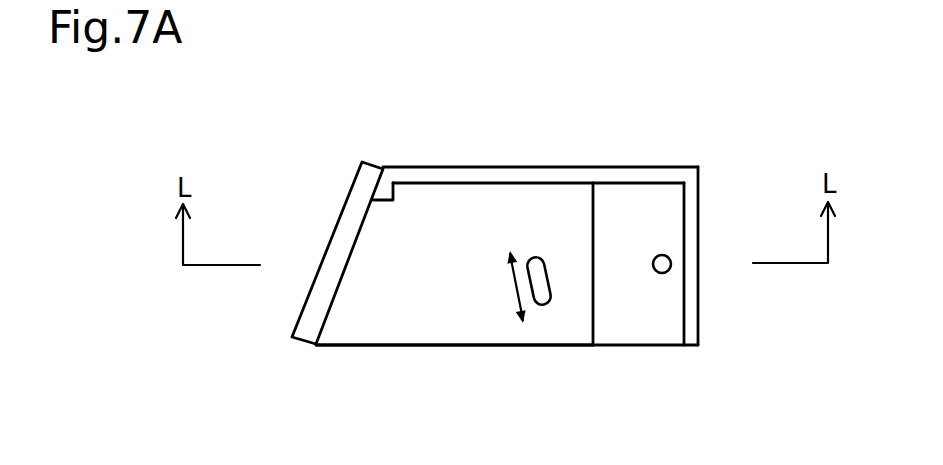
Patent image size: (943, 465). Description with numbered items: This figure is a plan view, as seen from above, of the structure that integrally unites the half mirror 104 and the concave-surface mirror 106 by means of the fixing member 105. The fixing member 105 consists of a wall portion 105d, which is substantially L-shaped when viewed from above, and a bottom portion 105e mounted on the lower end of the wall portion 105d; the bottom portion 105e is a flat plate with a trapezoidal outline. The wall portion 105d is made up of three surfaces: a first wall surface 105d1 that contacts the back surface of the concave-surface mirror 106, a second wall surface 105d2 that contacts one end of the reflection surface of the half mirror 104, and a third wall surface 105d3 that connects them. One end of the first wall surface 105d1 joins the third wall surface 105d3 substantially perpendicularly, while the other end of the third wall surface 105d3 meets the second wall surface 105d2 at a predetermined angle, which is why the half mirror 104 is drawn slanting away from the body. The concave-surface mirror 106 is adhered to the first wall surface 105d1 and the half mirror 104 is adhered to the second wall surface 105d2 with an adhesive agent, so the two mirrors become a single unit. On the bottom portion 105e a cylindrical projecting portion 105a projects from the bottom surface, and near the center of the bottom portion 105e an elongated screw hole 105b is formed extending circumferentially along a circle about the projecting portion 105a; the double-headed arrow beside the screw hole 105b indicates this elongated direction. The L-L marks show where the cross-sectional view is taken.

The half mirror 104 is at (346, 202).
The fixing member 105 is at (370, 327).
The projecting portion 105a is at (671, 265).
The elongated screw hole 105b is at (553, 295).
The wall portion 105d is at (557, 153).
The first wall surface 105d1 is at (694, 220).
The second wall surface 105d2 is at (388, 185).
The third wall surface 105d3 is at (655, 172).
The bottom portion 105e is at (468, 333).
The concave-surface mirror 106 is at (645, 325).